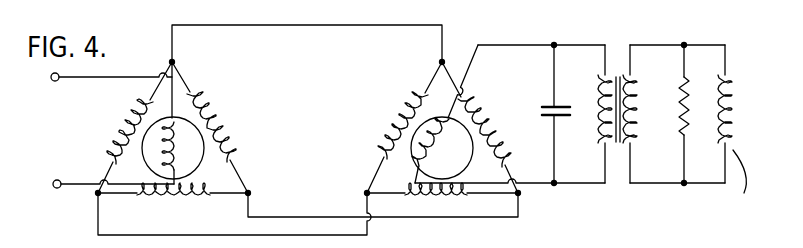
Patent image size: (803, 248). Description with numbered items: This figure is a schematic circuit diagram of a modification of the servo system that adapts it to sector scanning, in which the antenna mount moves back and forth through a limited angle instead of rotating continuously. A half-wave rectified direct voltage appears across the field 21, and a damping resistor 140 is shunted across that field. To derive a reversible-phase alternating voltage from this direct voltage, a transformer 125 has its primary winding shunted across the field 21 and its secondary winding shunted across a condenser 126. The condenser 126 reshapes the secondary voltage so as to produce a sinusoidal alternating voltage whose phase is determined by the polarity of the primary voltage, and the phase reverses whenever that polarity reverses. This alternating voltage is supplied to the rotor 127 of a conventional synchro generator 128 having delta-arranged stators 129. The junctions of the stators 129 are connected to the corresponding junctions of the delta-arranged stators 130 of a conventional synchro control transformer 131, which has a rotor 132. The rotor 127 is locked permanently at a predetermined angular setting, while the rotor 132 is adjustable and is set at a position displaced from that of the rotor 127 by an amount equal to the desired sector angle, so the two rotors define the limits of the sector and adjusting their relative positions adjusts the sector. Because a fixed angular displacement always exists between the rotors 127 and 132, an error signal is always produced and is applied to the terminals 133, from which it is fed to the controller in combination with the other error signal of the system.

The field 21 is at (733, 82).
The transformer 125 is at (628, 145).
The condenser 126 is at (544, 106).
The rotor 127 is at (437, 148).
The synchro generator 128 is at (443, 142).
The stators 129 is at (397, 124).
The stators 130 is at (226, 142).
The synchro control transformer 131 is at (183, 139).
The rotor 132 is at (182, 165).
The terminals 133 is at (57, 82).
The damping resistor 140 is at (676, 90).